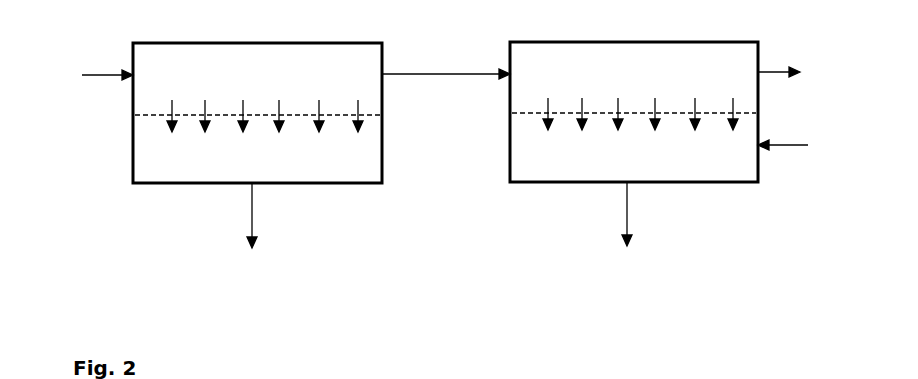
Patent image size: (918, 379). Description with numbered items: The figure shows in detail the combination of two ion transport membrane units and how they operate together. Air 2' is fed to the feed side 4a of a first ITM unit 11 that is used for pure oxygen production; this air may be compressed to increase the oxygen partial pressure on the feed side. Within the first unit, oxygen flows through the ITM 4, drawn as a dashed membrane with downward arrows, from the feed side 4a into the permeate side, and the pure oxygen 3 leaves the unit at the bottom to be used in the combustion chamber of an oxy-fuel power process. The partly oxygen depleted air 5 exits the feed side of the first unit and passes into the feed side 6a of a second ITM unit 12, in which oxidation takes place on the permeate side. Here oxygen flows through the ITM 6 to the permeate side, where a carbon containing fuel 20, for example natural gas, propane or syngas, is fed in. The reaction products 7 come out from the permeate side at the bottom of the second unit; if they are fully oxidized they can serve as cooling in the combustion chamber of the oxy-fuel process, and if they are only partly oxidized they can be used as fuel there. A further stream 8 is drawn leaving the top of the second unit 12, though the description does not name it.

The ITM unit 11 is at (257, 94).
The ITM unit 12 is at (634, 94).
The air 2' is at (99, 63).
The feed side 4a is at (265, 99).
The ITM 4 is at (99, 128).
The pure oxygen 3 is at (252, 197).
The partly oxygen depleted air 5 is at (466, 74).
The feed side 6a is at (640, 98).
The ITM 6 is at (478, 128).
The reaction products 7 is at (627, 200).
The top outlet stream of second unit 8 is at (770, 72).
The carbon containing fuel 20 is at (775, 145).